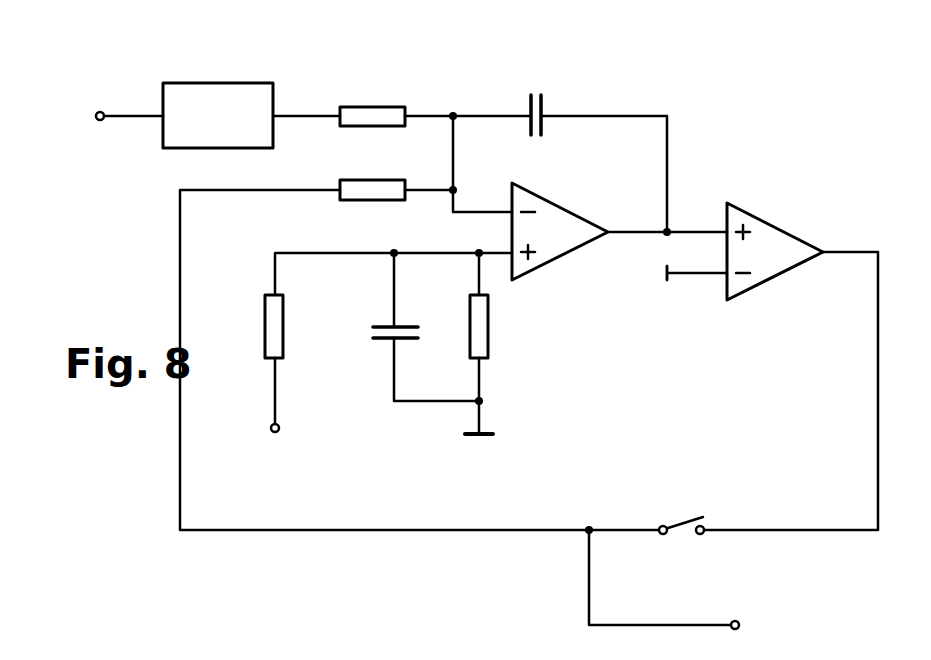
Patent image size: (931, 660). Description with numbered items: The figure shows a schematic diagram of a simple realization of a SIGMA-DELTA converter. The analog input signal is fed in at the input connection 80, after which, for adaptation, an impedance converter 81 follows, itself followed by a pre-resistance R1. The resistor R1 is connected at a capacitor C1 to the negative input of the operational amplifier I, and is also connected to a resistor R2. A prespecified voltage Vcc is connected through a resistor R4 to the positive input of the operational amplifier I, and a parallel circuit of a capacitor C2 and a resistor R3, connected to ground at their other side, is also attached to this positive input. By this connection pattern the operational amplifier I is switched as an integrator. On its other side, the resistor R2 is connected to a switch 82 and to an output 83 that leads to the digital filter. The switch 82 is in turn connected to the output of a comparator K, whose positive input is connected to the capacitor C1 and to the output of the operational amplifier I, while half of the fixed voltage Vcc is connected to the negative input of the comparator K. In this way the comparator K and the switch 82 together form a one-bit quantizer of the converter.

The input connection 80 is at (102, 110).
The impedance converter 81 is at (215, 100).
The pre-resistance R1 is at (372, 115).
The resistor R2 is at (372, 190).
The capacitor C1 is at (530, 100).
The operational amplifier I is at (560, 238).
The comparator K is at (775, 245).
The resistor R3 is at (479, 328).
The resistor R4 is at (275, 327).
The capacitor C2 is at (390, 327).
The prespecified voltage Vcc is at (275, 432).
The switch 82 is at (688, 521).
The output 83 is at (733, 620).